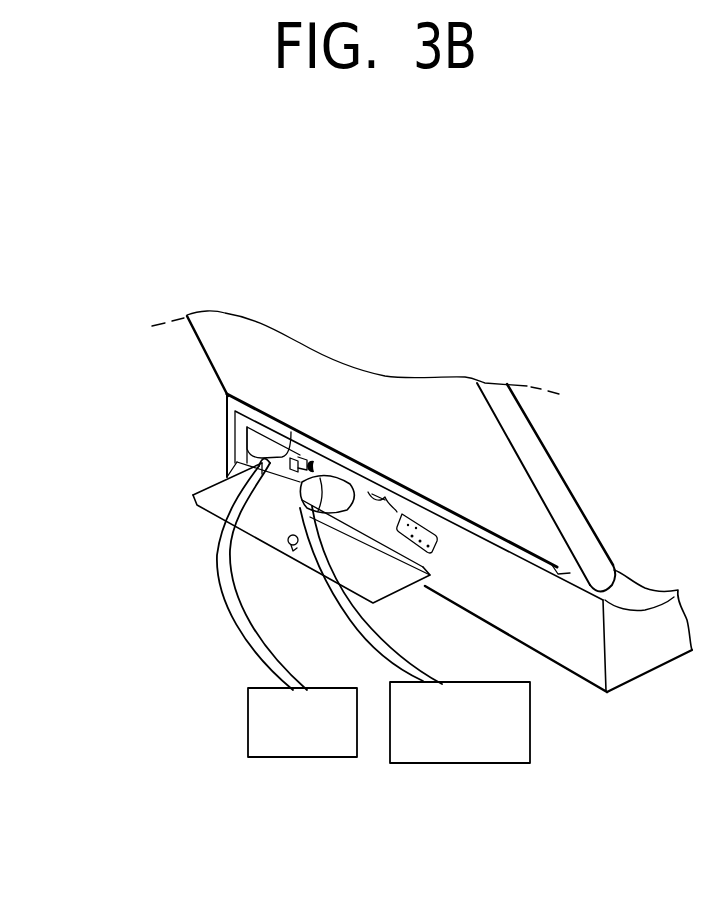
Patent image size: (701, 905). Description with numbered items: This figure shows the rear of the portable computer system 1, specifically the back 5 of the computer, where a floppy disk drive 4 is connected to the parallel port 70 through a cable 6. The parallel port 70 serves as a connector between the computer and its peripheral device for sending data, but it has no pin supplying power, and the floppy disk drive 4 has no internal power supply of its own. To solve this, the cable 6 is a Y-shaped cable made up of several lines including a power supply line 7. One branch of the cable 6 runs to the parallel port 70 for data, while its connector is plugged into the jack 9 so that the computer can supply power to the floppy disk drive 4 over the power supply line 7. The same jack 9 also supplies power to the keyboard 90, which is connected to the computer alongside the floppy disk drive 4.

The portable computer system 1 is at (195, 397).
The back of the computer 5 is at (583, 657).
The parallel port 70 is at (226, 458).
The power supply line 7 is at (265, 535).
The cable 6 is at (215, 577).
The jack 9 is at (340, 487).
The keyboard 90 is at (455, 764).
The floppy disk drive 4 is at (248, 722).